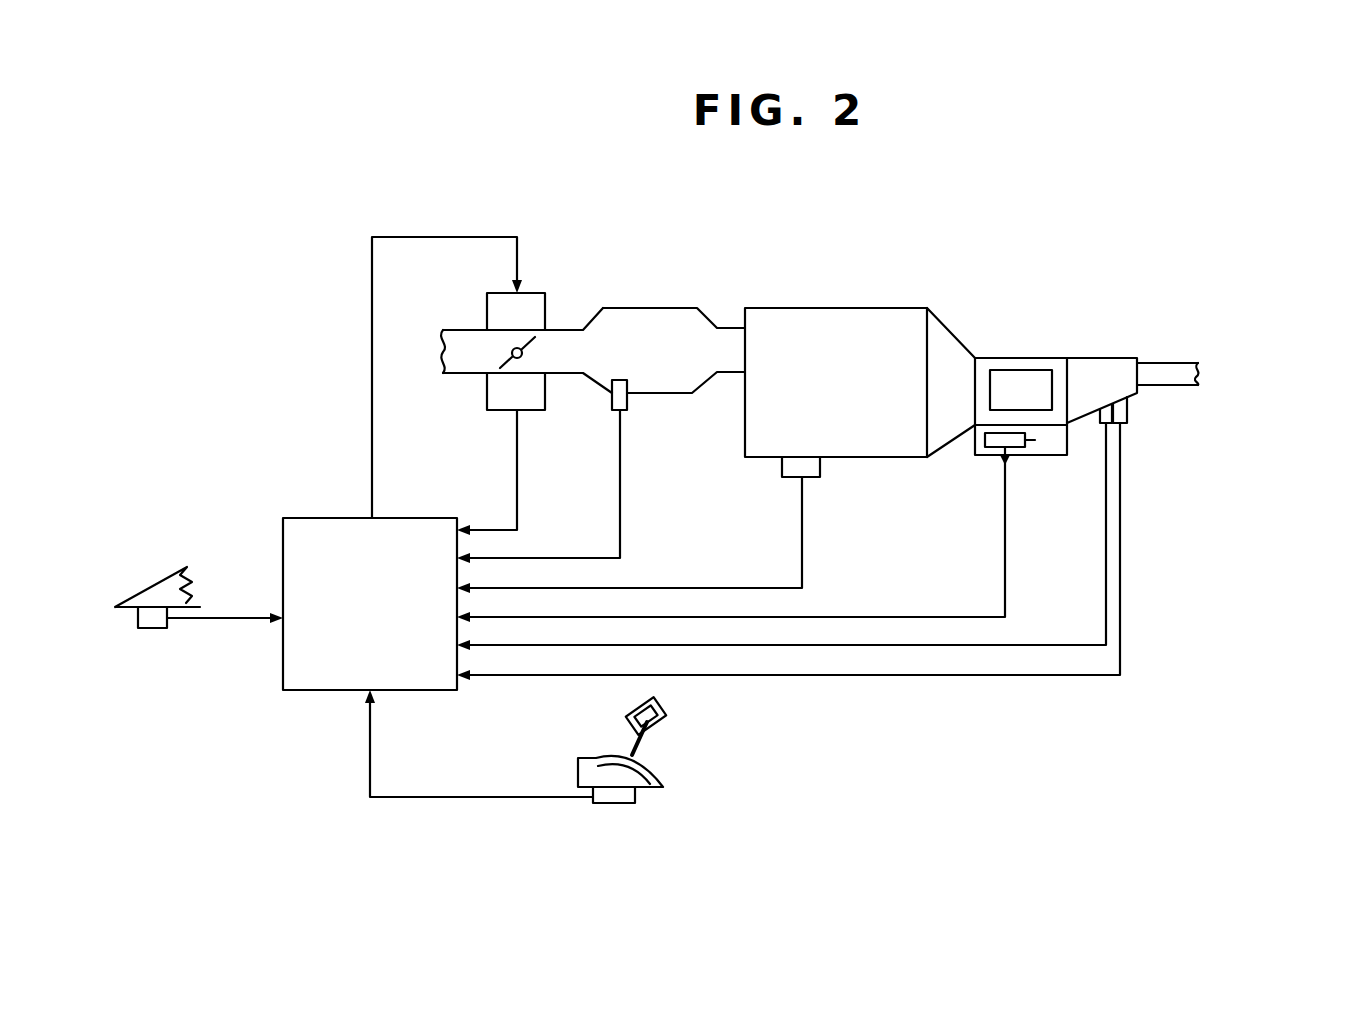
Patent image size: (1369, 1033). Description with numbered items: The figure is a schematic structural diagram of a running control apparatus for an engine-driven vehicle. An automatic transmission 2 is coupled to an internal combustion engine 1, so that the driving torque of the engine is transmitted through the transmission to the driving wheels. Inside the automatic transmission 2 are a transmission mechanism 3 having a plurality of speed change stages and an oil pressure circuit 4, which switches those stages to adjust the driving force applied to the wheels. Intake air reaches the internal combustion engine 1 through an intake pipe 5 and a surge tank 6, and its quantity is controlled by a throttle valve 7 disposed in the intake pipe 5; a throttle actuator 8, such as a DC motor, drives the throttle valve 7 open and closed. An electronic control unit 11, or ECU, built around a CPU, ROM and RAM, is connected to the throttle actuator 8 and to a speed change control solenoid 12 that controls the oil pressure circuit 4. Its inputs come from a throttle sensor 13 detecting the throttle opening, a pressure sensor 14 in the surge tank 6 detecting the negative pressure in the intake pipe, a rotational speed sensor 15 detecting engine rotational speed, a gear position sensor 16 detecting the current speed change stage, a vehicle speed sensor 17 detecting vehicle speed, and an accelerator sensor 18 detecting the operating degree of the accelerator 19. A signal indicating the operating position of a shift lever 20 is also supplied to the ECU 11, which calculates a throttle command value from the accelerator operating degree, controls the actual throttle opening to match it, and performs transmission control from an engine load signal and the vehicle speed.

The internal combustion engine 1 is at (838, 308).
The automatic transmission 2 is at (1047, 358).
The transmission mechanism 3 is at (1002, 370).
The oil pressure circuit 4 is at (1003, 462).
The intake pipe 5 is at (573, 330).
The surge tank 6 is at (680, 308).
The throttle valve 7 is at (517, 346).
The throttle actuator 8 is at (487, 316).
The electronic control unit 11 is at (315, 690).
The speed change control solenoid 12 is at (985, 440).
The throttle sensor 13 is at (487, 390).
The pressure sensor 14 is at (627, 400).
The rotational speed sensor 15 is at (782, 470).
The gear position sensor 16 is at (1100, 415).
The vehicle speed sensor 17 is at (1127, 410).
The accelerator sensor 18 is at (152, 628).
The accelerator 19 is at (153, 583).
The shift lever 20 is at (663, 778).